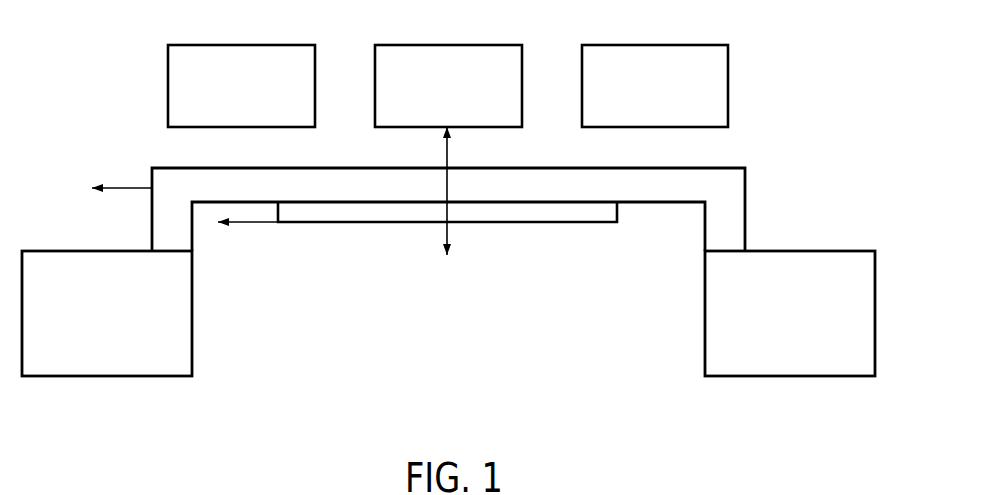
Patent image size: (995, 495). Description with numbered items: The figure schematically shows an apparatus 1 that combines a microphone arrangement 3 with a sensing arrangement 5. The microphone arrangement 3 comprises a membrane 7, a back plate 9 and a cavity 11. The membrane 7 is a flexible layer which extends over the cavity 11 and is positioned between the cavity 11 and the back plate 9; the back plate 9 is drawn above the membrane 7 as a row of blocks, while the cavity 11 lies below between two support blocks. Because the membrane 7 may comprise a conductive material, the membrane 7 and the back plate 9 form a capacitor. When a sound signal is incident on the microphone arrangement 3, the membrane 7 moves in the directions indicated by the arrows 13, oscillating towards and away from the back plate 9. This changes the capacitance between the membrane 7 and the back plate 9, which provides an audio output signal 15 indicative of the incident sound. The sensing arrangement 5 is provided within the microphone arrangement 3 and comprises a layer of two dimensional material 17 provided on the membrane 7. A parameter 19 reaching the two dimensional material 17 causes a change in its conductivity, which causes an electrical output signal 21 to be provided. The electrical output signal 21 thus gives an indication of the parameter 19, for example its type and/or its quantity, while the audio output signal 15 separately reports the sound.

The apparatus 1 is at (785, 48).
The microphone arrangement 3 is at (120, 93).
The sensing arrangement 5 is at (577, 224).
The membrane 7 is at (730, 198).
The back plate 9 is at (730, 93).
The cavity 11 is at (650, 358).
The arrows 13 is at (450, 158).
The audio output signal 15 is at (124, 188).
The two dimensional material 17 is at (605, 218).
The parameter 19 is at (355, 275).
The electrical output signal 21 is at (255, 223).